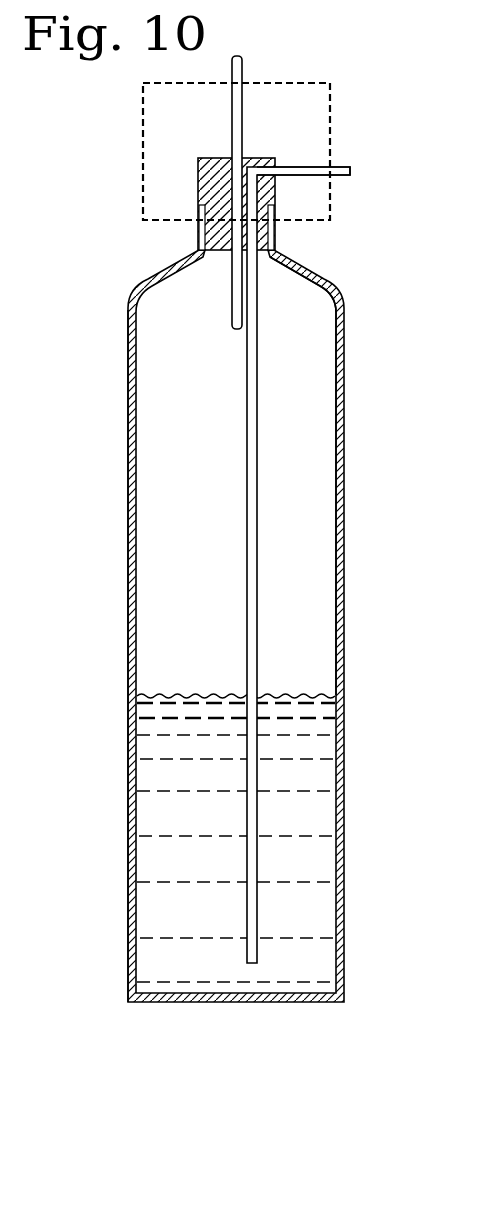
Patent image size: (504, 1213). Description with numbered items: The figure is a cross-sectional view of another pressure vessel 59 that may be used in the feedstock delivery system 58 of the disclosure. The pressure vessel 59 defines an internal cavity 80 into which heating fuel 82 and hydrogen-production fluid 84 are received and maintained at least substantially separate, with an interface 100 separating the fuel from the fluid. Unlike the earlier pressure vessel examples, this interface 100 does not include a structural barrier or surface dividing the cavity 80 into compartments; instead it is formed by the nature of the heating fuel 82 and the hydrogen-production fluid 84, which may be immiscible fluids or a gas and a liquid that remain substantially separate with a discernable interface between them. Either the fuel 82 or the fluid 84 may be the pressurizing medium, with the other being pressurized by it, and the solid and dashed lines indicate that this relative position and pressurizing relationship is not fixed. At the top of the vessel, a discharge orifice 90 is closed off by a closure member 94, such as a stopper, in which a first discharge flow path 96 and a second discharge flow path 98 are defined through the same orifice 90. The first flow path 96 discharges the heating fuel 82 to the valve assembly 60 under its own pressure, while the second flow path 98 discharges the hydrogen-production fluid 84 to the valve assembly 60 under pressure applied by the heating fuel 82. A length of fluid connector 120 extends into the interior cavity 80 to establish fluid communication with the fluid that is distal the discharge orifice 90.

The feedstock delivery system 58 is at (96, 281).
The pressure vessel 59 is at (123, 385).
The valve assembly 60 is at (140, 129).
The interior cavity 80 is at (309, 310).
The heating fuel 82 is at (303, 808).
The hydrogen-production fluid 84 is at (303, 497).
The discharge orifice 90 is at (218, 237).
The closure member 94 is at (212, 156).
The first discharge flow path 96 is at (350, 178).
The second discharge flow path 98 is at (243, 97).
The interface 100 is at (315, 694).
The fluid connector 120 is at (247, 592).